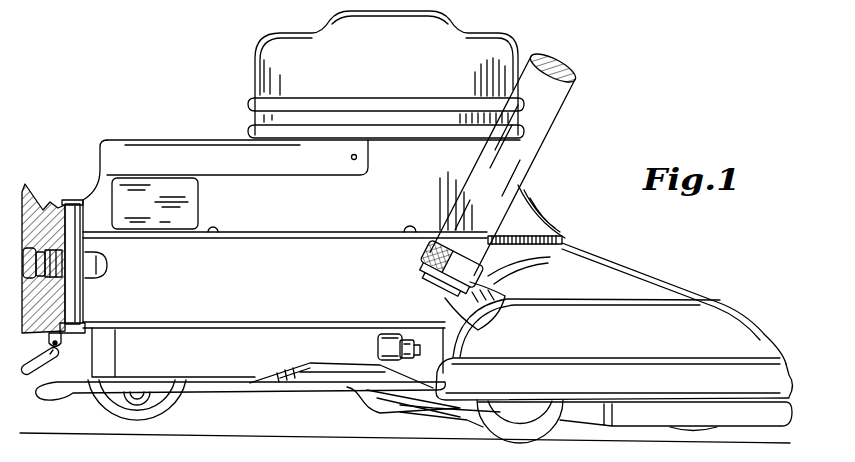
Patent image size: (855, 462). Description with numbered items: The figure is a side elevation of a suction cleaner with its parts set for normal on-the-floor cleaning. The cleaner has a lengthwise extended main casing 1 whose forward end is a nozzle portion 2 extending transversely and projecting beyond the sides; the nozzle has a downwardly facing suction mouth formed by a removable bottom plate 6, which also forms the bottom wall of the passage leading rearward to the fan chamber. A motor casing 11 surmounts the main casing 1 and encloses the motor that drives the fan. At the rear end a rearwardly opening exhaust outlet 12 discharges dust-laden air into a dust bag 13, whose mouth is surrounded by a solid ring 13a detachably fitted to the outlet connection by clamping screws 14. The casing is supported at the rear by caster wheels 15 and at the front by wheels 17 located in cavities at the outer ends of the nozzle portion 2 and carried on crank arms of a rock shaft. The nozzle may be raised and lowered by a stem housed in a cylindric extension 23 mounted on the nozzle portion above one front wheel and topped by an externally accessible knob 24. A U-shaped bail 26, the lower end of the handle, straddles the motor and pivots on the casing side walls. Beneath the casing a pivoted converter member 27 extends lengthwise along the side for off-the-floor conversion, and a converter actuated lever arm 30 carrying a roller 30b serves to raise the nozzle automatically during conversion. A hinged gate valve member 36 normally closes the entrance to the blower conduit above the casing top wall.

The main casing 1 is at (290, 262).
The nozzle portion 2 is at (638, 266).
The bottom plate 6 is at (380, 424).
The motor casing 11 is at (367, 72).
The exhaust outlet 12 is at (88, 264).
The dust bag 13 is at (30, 213).
The solid ring 13a is at (73, 222).
The clamping screws 14 is at (40, 297).
The rear caster wheels 15 is at (183, 410).
The front wheels 17 is at (467, 417).
The cylindric extension 23 is at (510, 281).
The knob 24 is at (427, 272).
The U-shaped bail 26 is at (557, 117).
The converter member 27 is at (333, 322).
The converter actuated lever arm 30 is at (429, 351).
The roller 30b is at (380, 348).
The hinged gate valve member 36 is at (185, 218).